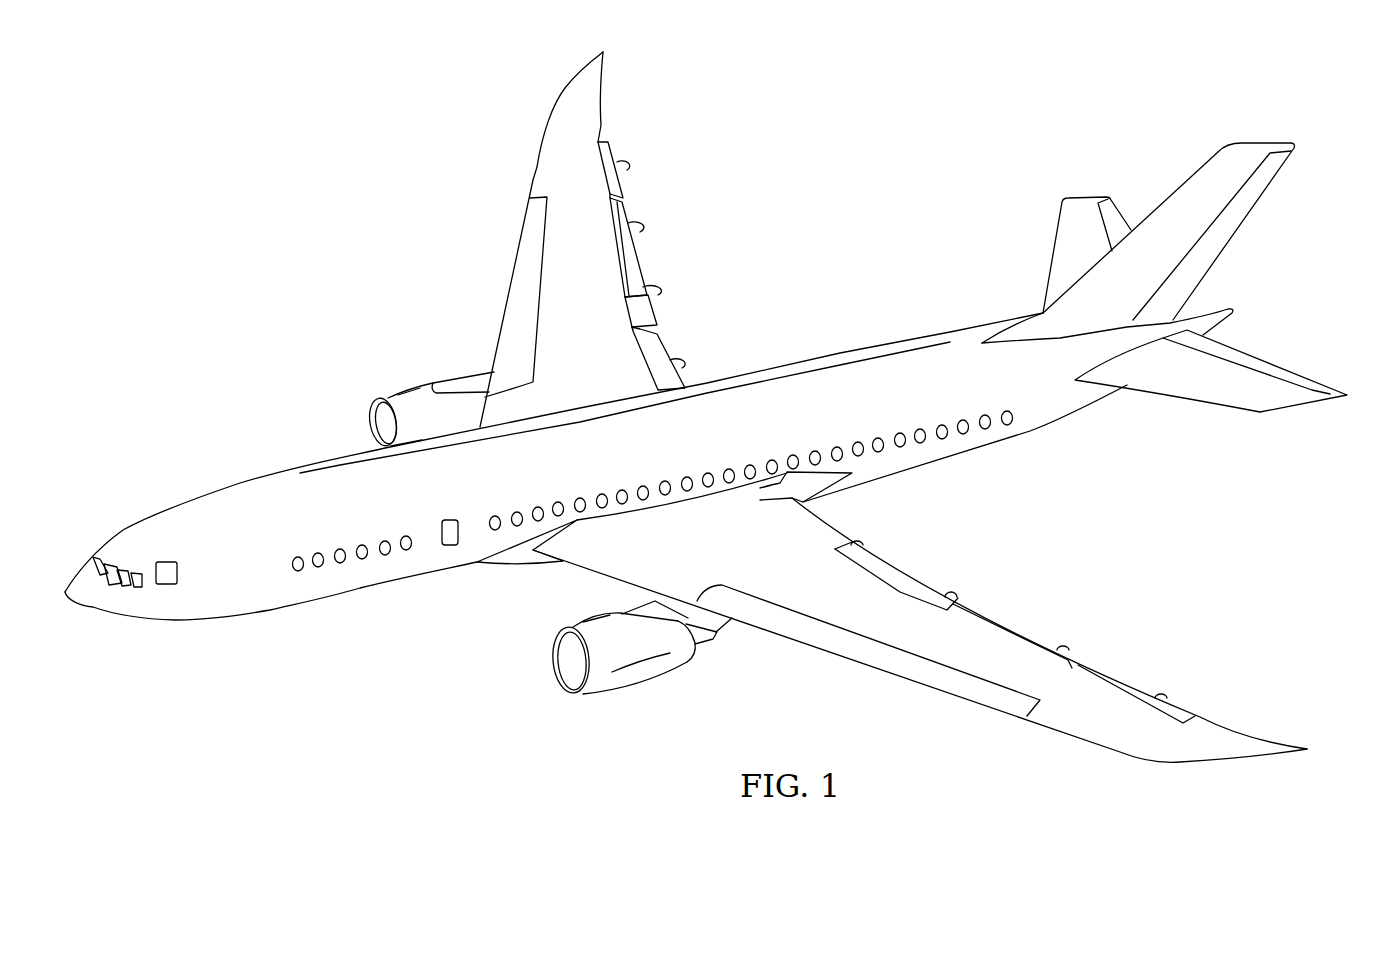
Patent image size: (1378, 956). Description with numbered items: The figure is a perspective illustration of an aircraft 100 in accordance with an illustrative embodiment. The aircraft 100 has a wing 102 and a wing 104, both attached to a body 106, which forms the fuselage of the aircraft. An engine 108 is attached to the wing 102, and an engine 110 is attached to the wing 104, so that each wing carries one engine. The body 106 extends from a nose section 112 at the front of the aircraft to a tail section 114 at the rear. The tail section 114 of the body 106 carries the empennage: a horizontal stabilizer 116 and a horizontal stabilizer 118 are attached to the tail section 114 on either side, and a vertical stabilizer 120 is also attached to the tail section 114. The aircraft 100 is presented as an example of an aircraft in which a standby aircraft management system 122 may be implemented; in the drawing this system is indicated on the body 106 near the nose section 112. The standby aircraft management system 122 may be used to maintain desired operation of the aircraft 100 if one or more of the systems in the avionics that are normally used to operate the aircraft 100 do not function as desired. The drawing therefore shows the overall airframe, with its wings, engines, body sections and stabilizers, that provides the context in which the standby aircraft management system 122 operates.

The aircraft 100 is at (318, 309).
The wing 102 is at (606, 88).
The wing 104 is at (1077, 736).
The body 106 is at (847, 347).
The engine 108 is at (401, 380).
The engine 110 is at (645, 688).
The nose section 112 is at (140, 518).
The tail section 114 is at (1262, 277).
The horizontal stabilizer 116 is at (1058, 222).
The horizontal stabilizer 118 is at (1200, 400).
The vertical stabilizer 120 is at (1256, 145).
The standby aircraft management system 122 is at (178, 570).